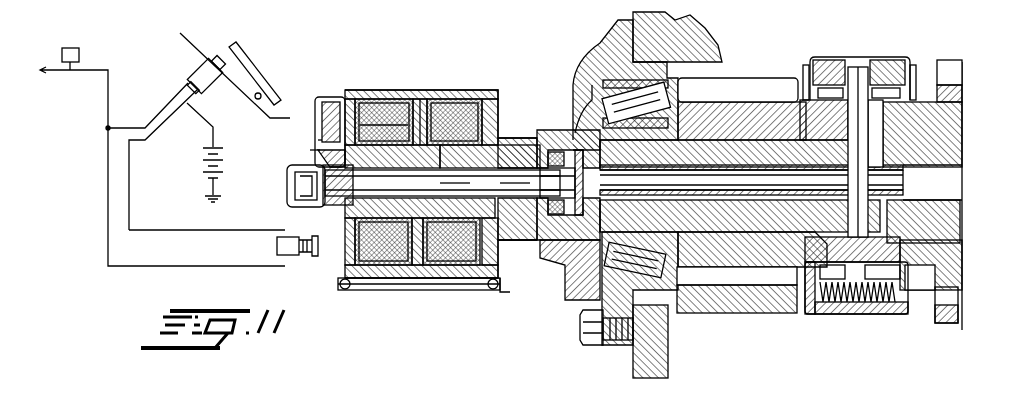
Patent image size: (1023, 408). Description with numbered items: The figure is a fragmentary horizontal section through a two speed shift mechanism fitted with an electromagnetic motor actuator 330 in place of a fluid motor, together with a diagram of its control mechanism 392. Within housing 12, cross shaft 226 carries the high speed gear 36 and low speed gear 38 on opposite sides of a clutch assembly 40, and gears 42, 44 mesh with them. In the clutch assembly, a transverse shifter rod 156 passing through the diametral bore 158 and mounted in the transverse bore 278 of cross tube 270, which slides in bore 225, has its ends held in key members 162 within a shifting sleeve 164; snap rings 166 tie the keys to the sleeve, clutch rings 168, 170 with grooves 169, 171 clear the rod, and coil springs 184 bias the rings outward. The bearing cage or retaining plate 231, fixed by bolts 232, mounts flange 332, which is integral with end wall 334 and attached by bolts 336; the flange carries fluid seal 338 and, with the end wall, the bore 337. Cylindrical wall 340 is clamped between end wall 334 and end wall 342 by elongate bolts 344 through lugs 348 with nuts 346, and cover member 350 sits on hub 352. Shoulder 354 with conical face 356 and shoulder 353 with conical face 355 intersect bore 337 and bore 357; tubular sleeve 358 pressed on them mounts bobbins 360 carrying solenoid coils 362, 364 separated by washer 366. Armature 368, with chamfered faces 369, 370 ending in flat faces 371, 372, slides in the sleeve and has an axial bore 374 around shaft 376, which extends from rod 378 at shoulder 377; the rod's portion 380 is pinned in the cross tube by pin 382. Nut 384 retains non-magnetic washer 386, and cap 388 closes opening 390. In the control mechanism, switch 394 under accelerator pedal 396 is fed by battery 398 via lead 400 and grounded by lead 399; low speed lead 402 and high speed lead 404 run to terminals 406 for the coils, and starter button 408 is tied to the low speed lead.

The housing 12 is at (705, 30).
The high speed gear 36 is at (948, 60).
The low speed gear 38 is at (745, 78).
The clutch assembly 40 is at (829, 330).
The gear 42 is at (934, 316).
The gear 44 is at (705, 313).
The transverse shifter rod 156 is at (880, 152).
The diametral bore 158 is at (893, 217).
The key members 162 is at (905, 57).
The shifting cage or sleeve 164 is at (858, 57).
The snap rings 166 is at (926, 62).
The clutch ring 168 is at (884, 60).
The radially extending grooves 169 is at (922, 134).
The clutch ring 170 is at (828, 60).
The grooves 171 is at (725, 111).
The coil springs 184 is at (860, 315).
The bore 225 is at (950, 196).
The cross shaft 226 is at (752, 249).
The bearing cage or retaining plate 231 is at (585, 60).
The bolts 232 is at (580, 342).
The cross tube 270 is at (740, 216).
The transverse bore 278 is at (890, 178).
The electromagnetic motor actuator 330 is at (386, 305).
The flange 332 is at (555, 130).
The end wall 334 is at (496, 92).
The bolts 336 is at (556, 280).
The bore 337 is at (517, 149).
The fluid seal 338 is at (574, 182).
The cylindrical wall 340 is at (422, 98).
The end wall 342 is at (350, 92).
The elongate bolts 344 is at (440, 292).
The nuts 346 is at (506, 295).
The lugs or ears 348 is at (485, 300).
The cover member 350 is at (320, 97).
The hub 352 is at (316, 140).
The shoulder 353 is at (318, 112).
The shoulder 354 is at (517, 238).
The frusto conical inner face 355 is at (338, 185).
The frusto conical inner face 356 is at (504, 182).
The bore 357 is at (331, 157).
The tubular sleeve 358 is at (445, 187).
The bobbins 360 is at (440, 86).
The solenoid coil 362 is at (375, 100).
The solenoid coil 364 is at (458, 100).
The washer 366 is at (418, 100).
The movable core or armature 368 is at (384, 126).
The conical face 369 is at (392, 156).
The conical face 370 is at (483, 156).
The flat abutment face 371 is at (383, 241).
The flat abutment face 372 is at (451, 241).
The axial bore 374 is at (420, 208).
The shaft 376 is at (442, 183).
The shoulder 377 is at (517, 219).
The rod 378 is at (541, 183).
The axially extending portion 380 is at (740, 134).
The pin 382 is at (618, 216).
The nut 384 is at (312, 152).
The non-magnetic washer 386 is at (298, 170).
The cap 388 is at (295, 184).
The opening 390 is at (290, 203).
The control mechanism 392 is at (87, 167).
The electric switch 394 is at (186, 66).
The accelerator pedal 396 is at (240, 60).
The battery 398 is at (203, 163).
The lead 399 is at (204, 195).
The lead 400 is at (203, 118).
The low speed control lead 402 is at (124, 120).
The high speed control lead 404 is at (203, 230).
The terminals 406 is at (635, 242).
The starter button 408 is at (79, 52).